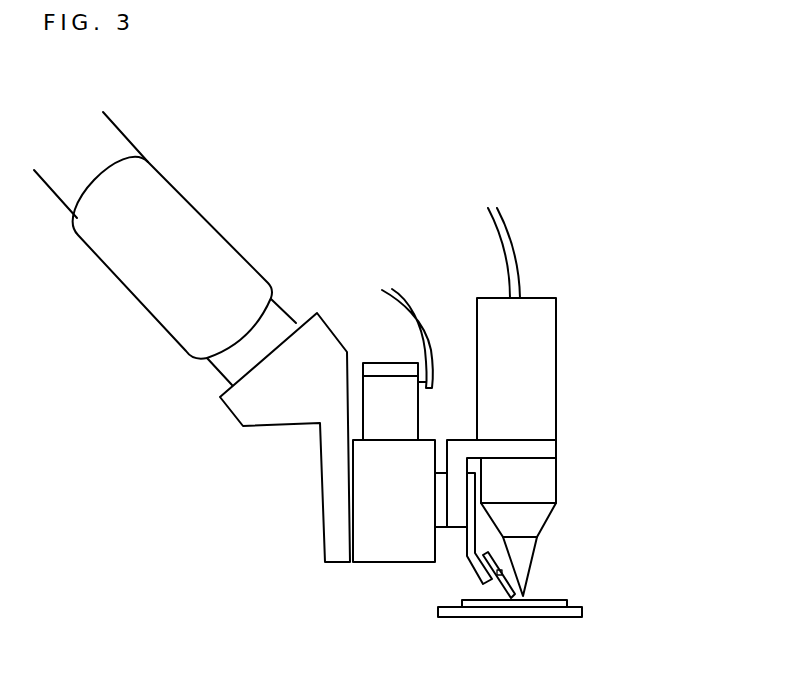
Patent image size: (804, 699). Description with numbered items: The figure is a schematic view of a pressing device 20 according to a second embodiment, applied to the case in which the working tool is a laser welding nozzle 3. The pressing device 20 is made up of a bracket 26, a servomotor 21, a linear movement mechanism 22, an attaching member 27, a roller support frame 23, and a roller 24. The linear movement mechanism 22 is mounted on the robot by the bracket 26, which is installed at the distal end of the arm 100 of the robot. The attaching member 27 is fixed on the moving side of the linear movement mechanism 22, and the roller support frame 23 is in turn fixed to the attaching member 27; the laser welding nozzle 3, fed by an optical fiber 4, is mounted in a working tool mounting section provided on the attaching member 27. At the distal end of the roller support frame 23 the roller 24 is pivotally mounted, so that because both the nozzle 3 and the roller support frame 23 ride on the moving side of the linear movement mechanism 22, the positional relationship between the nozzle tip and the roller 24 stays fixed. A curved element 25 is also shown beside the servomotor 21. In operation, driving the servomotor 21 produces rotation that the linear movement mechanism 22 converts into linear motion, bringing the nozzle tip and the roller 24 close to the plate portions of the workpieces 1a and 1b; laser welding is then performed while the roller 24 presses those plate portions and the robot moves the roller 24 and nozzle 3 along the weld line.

The arm 100 is at (196, 211).
The bracket 26 is at (228, 408).
The pressing device 20 is at (480, 463).
The linear movement mechanism 22 is at (380, 555).
The servomotor 21 is at (378, 388).
The curved guide plate 25 is at (419, 308).
The attaching member 27 is at (552, 452).
The roller support frame 23 is at (468, 558).
The roller 24 is at (497, 591).
The laser welding nozzle 3 is at (552, 398).
The optical fiber 4 is at (510, 235).
The workpiece 1b is at (553, 598).
The workpiece 1a is at (564, 618).